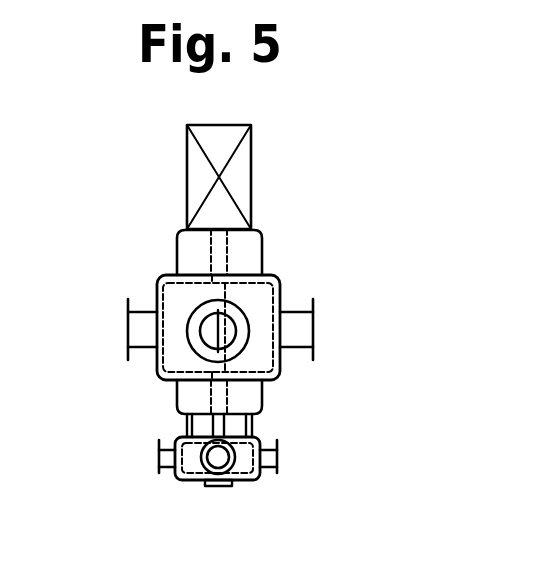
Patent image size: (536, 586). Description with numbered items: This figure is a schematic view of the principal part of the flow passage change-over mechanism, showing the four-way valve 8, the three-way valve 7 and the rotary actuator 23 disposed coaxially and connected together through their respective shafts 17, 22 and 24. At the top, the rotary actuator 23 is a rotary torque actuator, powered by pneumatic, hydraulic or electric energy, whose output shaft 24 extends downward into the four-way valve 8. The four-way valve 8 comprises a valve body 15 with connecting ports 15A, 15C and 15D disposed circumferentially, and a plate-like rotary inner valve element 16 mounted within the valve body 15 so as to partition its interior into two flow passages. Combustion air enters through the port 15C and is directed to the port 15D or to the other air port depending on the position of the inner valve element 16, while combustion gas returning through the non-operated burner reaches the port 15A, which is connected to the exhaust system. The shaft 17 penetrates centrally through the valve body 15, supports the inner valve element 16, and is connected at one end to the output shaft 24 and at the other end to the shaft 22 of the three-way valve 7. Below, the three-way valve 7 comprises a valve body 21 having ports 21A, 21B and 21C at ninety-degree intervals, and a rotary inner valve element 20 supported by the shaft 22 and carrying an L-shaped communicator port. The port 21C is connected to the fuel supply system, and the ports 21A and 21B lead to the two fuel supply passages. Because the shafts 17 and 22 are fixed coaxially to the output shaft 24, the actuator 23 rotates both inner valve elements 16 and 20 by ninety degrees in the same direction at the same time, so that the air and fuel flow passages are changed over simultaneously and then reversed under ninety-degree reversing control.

The three-way valve 7 is at (173, 487).
The four-way valve 8 is at (130, 283).
The valve body 15 is at (157, 374).
The connecting port 15A is at (133, 335).
The connecting port 15C is at (312, 335).
The connecting port 15D is at (233, 342).
The rotary inner valve element 16 is at (178, 296).
The shaft 17 is at (223, 296).
The rotary inner valve element 20 is at (195, 472).
The valve body 21 is at (260, 440).
The connecting port 21A is at (158, 456).
The connecting port 21B is at (280, 460).
The connecting port 21C is at (230, 470).
The shaft 22 is at (250, 425).
The rotary actuator 23 is at (248, 153).
The output shaft 24 is at (227, 253).